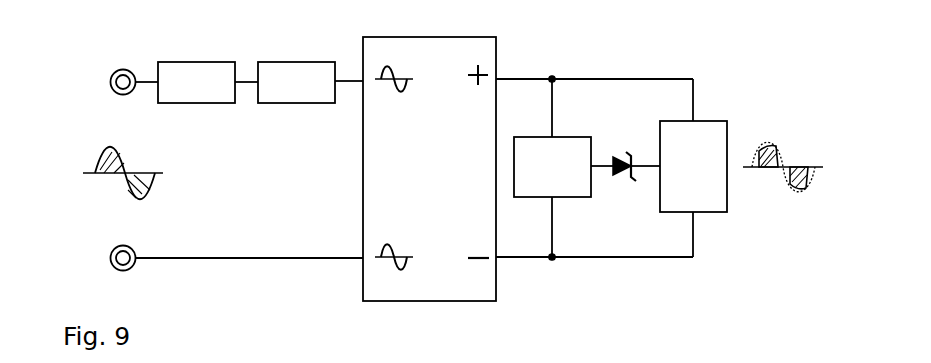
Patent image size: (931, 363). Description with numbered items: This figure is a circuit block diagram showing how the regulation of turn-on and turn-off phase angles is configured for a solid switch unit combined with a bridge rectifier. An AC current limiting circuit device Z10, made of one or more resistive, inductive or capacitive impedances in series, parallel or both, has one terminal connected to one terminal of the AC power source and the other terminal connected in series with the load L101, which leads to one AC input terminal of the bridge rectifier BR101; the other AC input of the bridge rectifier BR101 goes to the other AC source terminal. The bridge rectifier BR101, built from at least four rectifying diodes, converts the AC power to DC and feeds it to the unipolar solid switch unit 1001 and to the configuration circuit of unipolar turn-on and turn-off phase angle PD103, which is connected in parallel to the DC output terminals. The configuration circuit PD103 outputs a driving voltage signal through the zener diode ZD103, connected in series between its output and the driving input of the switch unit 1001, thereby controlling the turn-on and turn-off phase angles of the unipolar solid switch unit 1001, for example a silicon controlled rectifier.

The AC current limiting circuit device Z10 is at (196, 82).
The load L101 is at (296, 82).
The bridge rectifier BR101 is at (429, 169).
The unipolar solid switch unit 1001 is at (552, 167).
The zener diode ZD103 is at (617, 177).
The configuration circuit of unipolar turn-on and turn-off phase angle PD103 is at (693, 166).